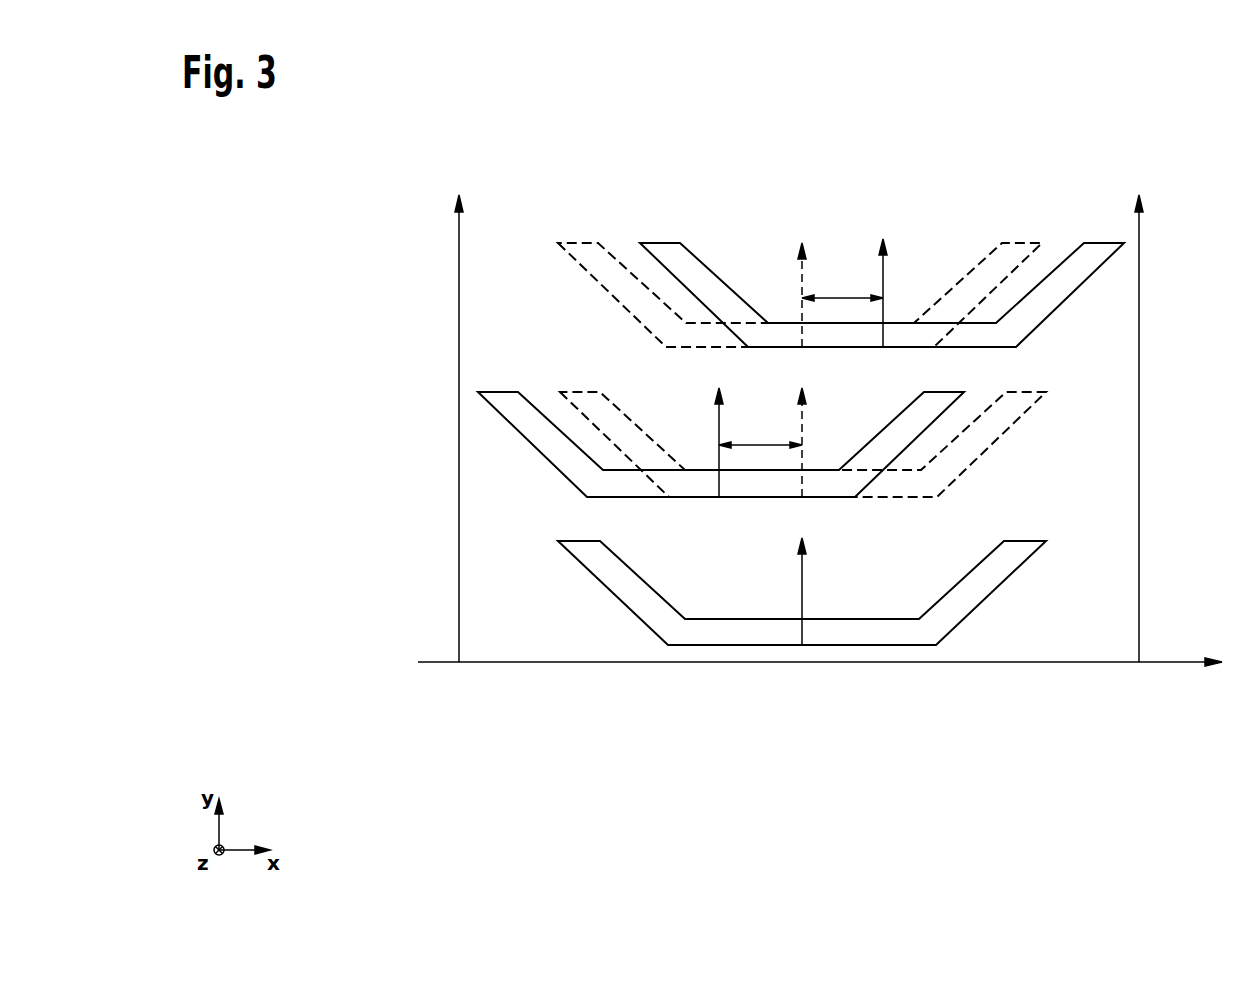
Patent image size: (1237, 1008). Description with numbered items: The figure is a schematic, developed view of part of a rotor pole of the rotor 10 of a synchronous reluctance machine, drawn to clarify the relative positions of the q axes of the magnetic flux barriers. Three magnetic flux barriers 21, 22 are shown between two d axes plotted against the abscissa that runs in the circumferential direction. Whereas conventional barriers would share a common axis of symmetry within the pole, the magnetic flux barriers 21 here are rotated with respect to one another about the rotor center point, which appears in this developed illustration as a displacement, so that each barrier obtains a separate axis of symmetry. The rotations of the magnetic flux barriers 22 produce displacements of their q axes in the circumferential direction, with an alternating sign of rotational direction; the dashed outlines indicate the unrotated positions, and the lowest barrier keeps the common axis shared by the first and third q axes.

The rotor 10 is at (332, 192).
The magnetic flux barrier 21 is at (1075, 277).
The magnetic flux barrier 22 is at (972, 590).